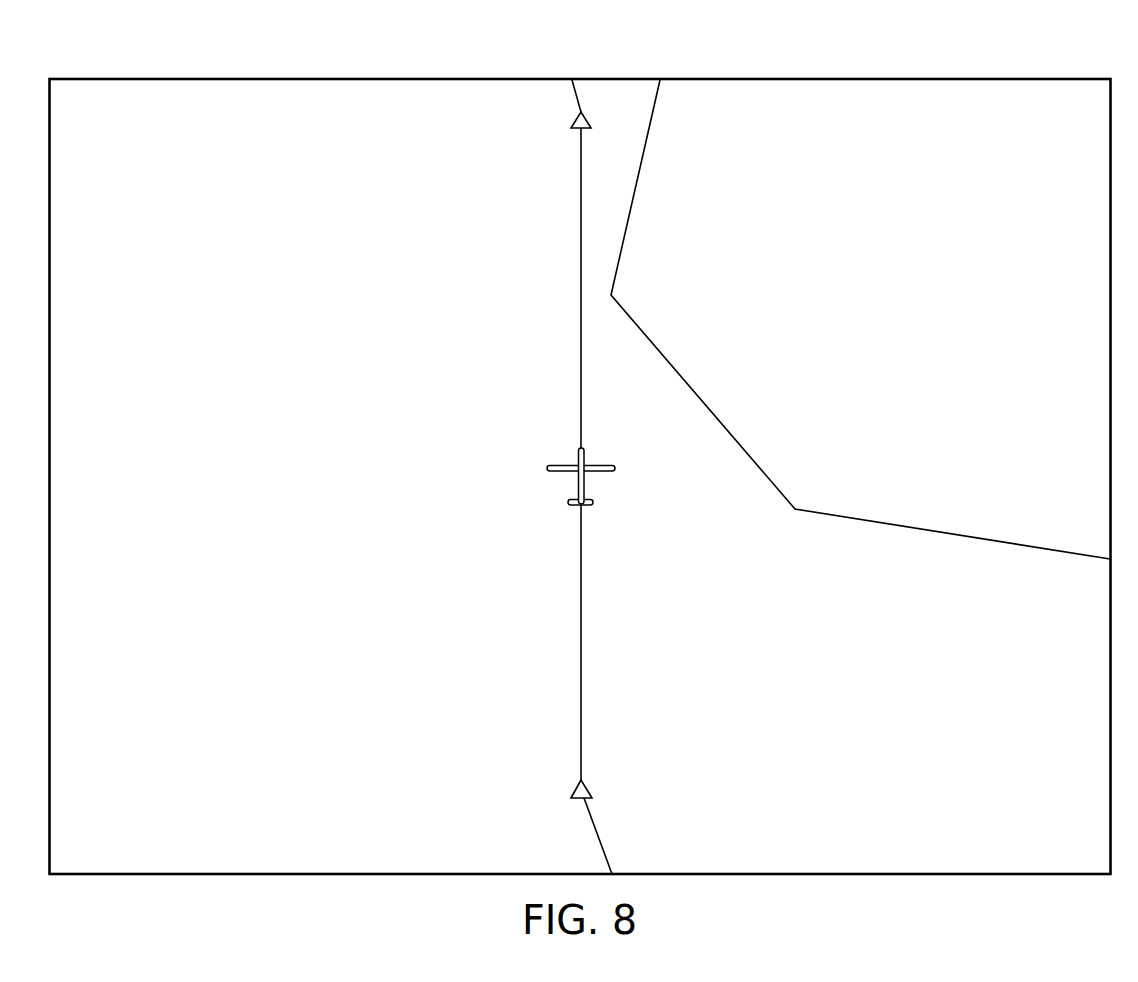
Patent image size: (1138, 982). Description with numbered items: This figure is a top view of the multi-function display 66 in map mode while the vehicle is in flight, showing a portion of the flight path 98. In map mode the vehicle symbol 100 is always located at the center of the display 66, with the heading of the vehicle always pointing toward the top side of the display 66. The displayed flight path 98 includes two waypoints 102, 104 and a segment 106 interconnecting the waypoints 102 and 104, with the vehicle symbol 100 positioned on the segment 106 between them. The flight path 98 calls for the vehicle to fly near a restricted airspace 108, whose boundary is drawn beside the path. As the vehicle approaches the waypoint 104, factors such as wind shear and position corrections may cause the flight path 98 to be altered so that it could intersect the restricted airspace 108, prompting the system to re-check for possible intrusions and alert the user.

The multi-function display 66 is at (126, 79).
The flight path 98 is at (512, 470).
The vehicle symbol 100 is at (534, 466).
The waypoint 102 is at (572, 794).
The waypoint 104 is at (572, 124).
The segment 106 is at (579, 297).
The restricted airspace 108 is at (955, 537).